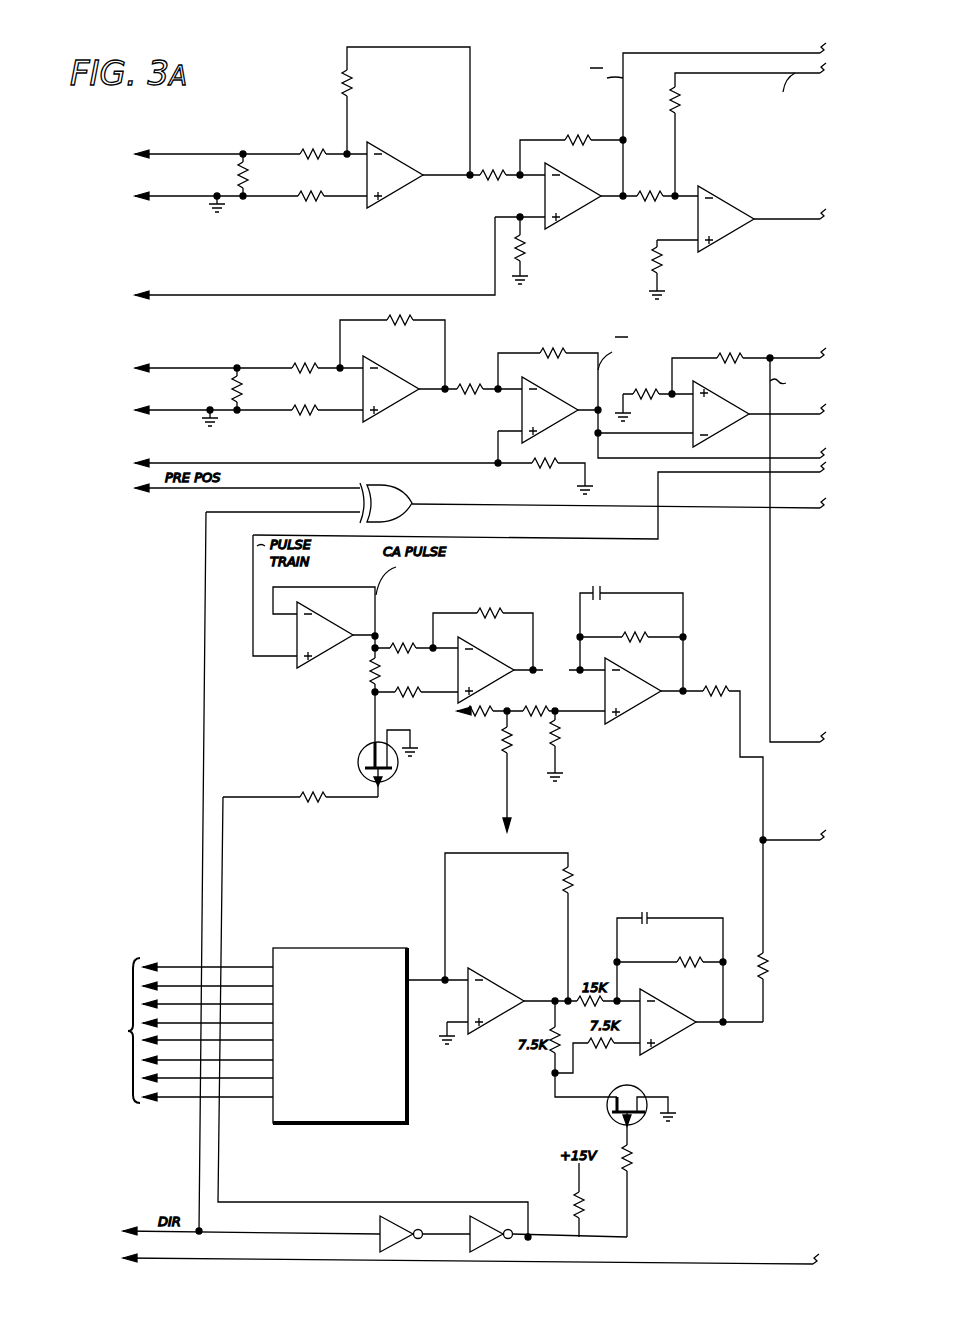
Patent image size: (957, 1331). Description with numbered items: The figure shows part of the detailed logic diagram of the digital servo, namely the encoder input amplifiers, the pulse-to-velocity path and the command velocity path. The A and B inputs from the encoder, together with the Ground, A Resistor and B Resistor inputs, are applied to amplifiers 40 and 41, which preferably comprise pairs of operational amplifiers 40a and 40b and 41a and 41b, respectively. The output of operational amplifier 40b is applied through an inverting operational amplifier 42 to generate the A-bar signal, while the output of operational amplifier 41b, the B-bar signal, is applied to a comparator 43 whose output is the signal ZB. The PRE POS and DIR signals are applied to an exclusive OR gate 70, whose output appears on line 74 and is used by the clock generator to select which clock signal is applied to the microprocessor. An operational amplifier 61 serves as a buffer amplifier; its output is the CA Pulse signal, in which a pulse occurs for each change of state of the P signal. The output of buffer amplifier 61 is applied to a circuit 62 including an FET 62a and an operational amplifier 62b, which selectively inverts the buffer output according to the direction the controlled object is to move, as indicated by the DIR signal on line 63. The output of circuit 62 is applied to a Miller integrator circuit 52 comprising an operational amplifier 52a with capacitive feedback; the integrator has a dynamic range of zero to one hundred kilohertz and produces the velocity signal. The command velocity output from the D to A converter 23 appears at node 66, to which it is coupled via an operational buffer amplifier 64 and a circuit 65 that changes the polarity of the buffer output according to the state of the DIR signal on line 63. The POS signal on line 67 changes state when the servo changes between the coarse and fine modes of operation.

The amplifier 40 is at (524, 96).
The operational amplifier 40a is at (404, 189).
The operational amplifier 40b is at (568, 220).
The inverting operational amplifier 42 is at (737, 233).
The amplifier 41 is at (475, 452).
The operational amplifier 41a is at (383, 412).
The operational amplifier 41b is at (547, 432).
The comparator 43 is at (724, 436).
The exclusive OR gate 70 is at (400, 494).
The line 74 is at (791, 512).
The operational amplifier 61 is at (305, 670).
The circuit 62 is at (457, 594).
The FET 62a is at (385, 780).
The operational amplifier 62b is at (484, 653).
The Miller integrator circuit 52 is at (659, 586).
The operational amplifier 52a is at (625, 719).
The line 63 is at (232, 797).
The node 66 is at (766, 846).
The D to A converter 23 is at (347, 1045).
The operational buffer amplifier 64 is at (478, 1032).
The circuit 65 is at (619, 1073).
The line 67 is at (692, 1264).